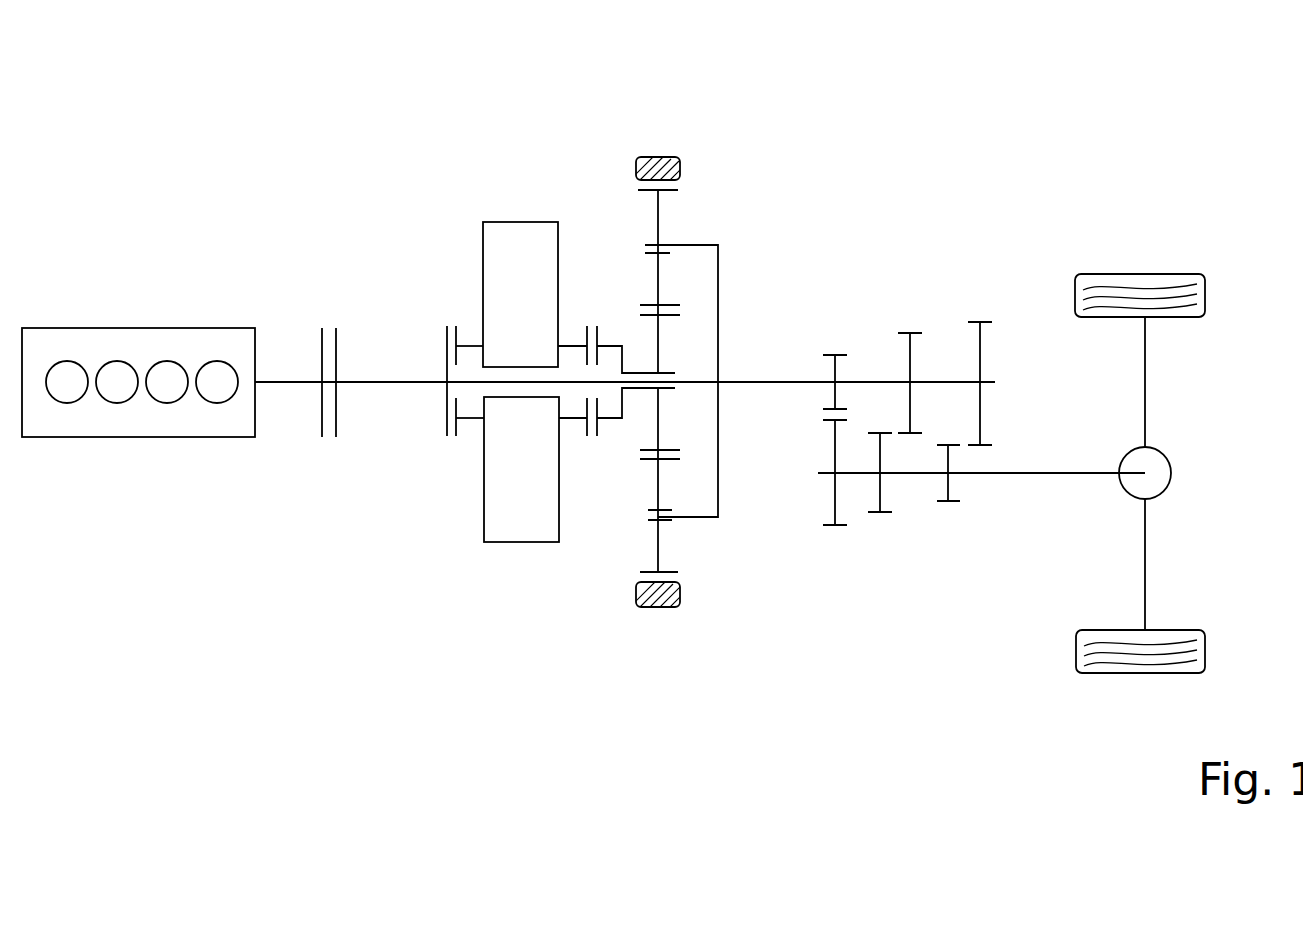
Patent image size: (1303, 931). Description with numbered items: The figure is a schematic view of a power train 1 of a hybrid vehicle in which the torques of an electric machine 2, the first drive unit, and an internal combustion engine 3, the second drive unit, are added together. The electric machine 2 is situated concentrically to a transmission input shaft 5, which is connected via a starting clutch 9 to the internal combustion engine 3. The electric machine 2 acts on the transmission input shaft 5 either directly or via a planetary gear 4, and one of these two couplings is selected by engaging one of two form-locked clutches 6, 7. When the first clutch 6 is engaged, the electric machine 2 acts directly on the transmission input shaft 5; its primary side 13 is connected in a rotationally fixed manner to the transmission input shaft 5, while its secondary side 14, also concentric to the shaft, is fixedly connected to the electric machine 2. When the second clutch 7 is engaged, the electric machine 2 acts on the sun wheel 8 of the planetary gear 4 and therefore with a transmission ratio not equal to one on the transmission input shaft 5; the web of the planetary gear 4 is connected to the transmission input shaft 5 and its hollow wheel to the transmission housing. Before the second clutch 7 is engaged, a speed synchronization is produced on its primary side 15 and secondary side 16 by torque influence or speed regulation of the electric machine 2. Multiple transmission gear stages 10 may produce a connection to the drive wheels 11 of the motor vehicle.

The power train 1 is at (147, 163).
The electric machine 2 is at (520, 207).
The internal combustion engine 3 is at (140, 420).
The planetary gear 4 is at (706, 387).
The transmission input shaft 5 is at (767, 380).
The first clutch 6 is at (445, 382).
The second clutch 7 is at (616, 382).
The sun wheel 8 is at (660, 348).
The starting clutch 9 is at (320, 315).
The transmission gear stages 10 is at (880, 515).
The drive wheels 11 is at (1197, 288).
The primary side 13 is at (447, 436).
The secondary side 14 is at (456, 436).
The primary side 15 is at (587, 436).
The secondary side 16 is at (597, 436).